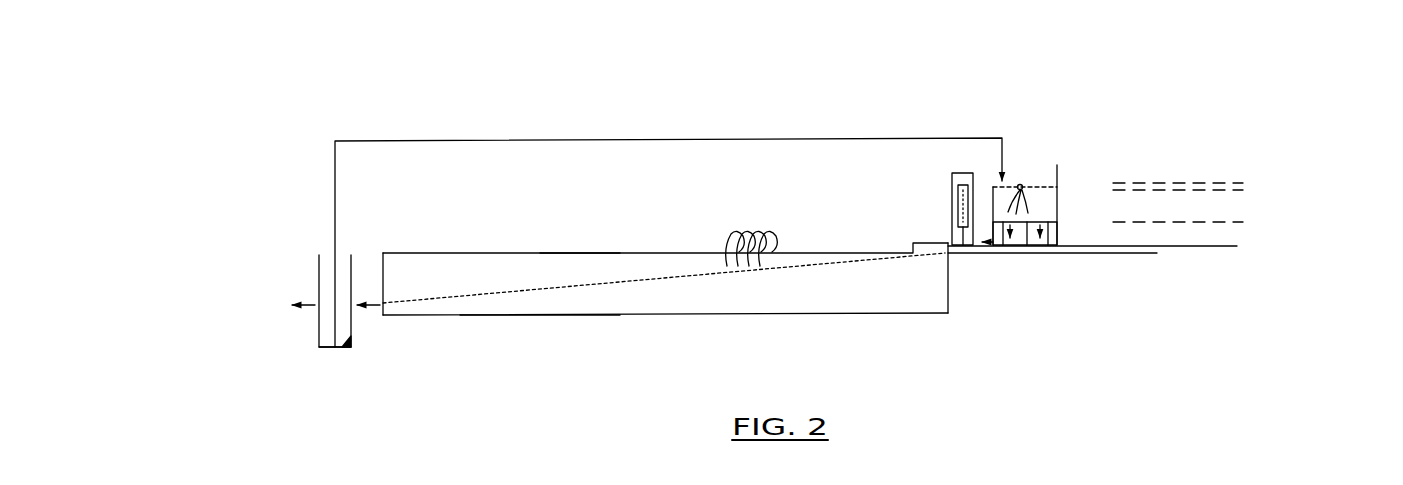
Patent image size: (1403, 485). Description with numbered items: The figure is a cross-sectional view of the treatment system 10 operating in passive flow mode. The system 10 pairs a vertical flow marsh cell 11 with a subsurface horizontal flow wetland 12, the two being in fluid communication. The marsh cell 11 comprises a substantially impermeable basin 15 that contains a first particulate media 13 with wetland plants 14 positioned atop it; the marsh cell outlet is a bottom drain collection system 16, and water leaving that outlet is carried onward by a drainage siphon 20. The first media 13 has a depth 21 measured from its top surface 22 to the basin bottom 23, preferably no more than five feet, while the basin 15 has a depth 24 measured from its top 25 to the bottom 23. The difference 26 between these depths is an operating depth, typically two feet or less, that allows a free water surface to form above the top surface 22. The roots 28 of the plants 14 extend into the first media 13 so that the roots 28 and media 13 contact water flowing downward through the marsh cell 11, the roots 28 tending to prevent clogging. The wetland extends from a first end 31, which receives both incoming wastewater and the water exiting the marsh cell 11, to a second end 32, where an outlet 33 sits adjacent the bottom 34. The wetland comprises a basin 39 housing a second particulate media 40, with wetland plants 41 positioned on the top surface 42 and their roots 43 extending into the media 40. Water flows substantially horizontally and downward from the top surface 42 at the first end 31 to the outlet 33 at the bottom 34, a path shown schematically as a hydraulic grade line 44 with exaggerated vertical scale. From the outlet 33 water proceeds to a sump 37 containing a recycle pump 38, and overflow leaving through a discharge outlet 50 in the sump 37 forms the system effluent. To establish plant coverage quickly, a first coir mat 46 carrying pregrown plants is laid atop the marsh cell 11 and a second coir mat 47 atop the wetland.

The system 10 is at (1169, 97).
The vertical flow marsh cell 11 is at (1040, 174).
The subsurface horizontal flow wetland 12 is at (666, 277).
The first particulate media 13 is at (1052, 198).
The wetland plants 14 is at (1018, 184).
The impermeable basin 15 is at (1057, 229).
The bottom drain collection system 16 is at (1023, 221).
The drainage siphon 20 is at (952, 171).
The first media depth 21 is at (1042, 213).
The top surface of first media 22 is at (1022, 183).
The basin bottom 23 is at (1054, 252).
The basin depth 24 is at (1200, 177).
The basin top 25 is at (1057, 190).
The operating depth difference 26 is at (1192, 212).
The roots 28 is at (994, 198).
The first end 31 is at (949, 298).
The second end 32 is at (385, 274).
The outlet 33 is at (386, 305).
The bottom 34 is at (621, 320).
The sump 37 is at (321, 350).
The recycle pump 38 is at (351, 346).
The wetland basin 39 is at (540, 332).
The second particulate media 40 is at (500, 286).
The wetland plants 41 is at (768, 232).
The top surface of second media 42 is at (444, 250).
The roots 43 is at (764, 251).
The hydraulic grade line 44 is at (602, 281).
The first coir mat 46 is at (1041, 200).
The second coir mat 47 is at (578, 252).
The discharge outlet 50 is at (312, 300).